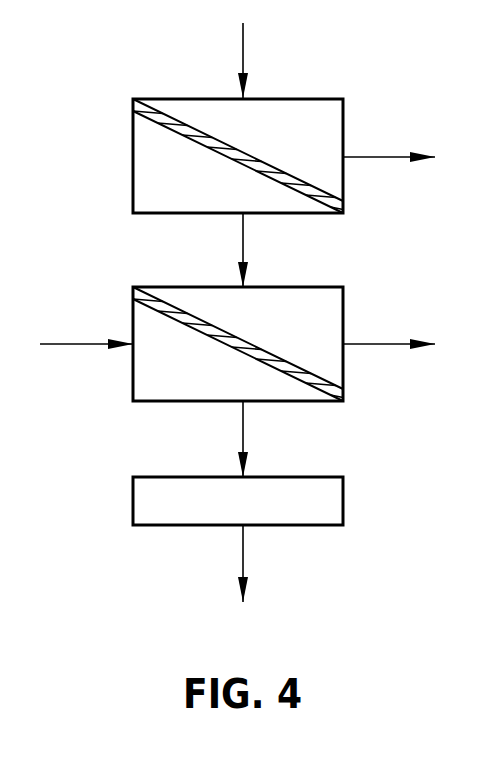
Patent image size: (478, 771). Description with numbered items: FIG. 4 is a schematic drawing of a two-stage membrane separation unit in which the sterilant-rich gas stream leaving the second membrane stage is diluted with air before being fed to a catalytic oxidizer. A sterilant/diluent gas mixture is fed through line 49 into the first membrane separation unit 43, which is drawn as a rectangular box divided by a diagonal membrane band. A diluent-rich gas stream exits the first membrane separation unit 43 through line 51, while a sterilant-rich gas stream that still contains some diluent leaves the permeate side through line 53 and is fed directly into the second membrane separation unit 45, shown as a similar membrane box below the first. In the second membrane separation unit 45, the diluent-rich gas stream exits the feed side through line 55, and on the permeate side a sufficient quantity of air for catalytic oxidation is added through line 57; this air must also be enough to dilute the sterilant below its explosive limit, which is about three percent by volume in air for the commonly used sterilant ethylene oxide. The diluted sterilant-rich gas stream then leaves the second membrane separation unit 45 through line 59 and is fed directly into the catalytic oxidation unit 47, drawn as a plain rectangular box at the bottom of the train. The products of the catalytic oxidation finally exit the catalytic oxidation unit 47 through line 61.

The first membrane separation unit 43 is at (298, 99).
The second membrane separation unit 45 is at (298, 287).
The catalytic oxidation unit 47 is at (300, 477).
The line 49 is at (242, 53).
The line 51 is at (372, 156).
The line 53 is at (242, 242).
The line 55 is at (373, 343).
The line 57 is at (72, 343).
The line 59 is at (242, 430).
The line 61 is at (242, 556).